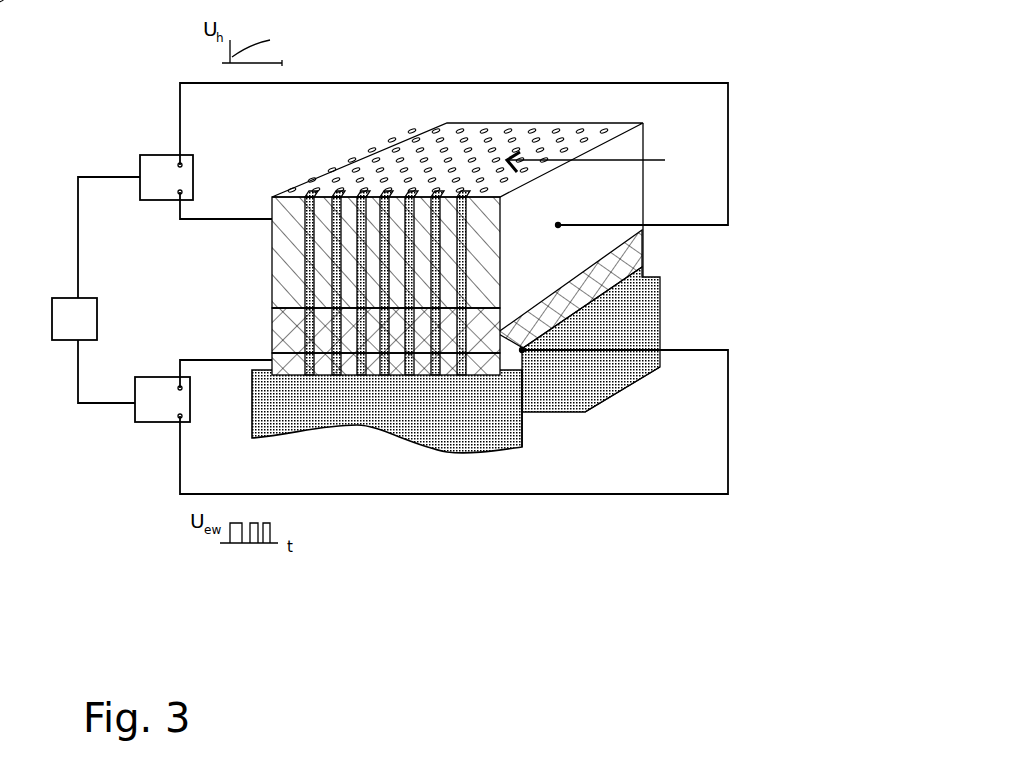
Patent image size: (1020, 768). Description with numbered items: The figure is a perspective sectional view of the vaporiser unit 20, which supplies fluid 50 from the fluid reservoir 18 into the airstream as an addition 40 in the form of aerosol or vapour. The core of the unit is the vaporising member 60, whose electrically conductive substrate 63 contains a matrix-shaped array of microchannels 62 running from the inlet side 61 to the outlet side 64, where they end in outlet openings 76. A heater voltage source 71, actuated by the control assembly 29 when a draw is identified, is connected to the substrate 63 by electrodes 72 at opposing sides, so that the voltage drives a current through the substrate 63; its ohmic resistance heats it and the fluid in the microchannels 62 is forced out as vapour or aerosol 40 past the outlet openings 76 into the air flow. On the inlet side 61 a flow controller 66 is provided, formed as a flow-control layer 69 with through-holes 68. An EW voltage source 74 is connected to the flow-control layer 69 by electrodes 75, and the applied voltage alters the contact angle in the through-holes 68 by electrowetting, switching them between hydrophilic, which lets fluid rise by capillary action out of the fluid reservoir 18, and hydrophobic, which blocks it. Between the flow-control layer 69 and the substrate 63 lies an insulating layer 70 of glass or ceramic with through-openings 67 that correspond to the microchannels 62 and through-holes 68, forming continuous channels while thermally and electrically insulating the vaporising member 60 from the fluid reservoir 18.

The fluid reservoir 18 is at (522, 417).
The vaporiser unit 20 is at (737, 275).
The control assembly 29 is at (92, 335).
The addition 40 is at (617, 160).
The fluid 50 is at (405, 418).
The vaporising member 60 is at (321, 213).
The inlet side 61 is at (293, 313).
The microchannels 62 is at (384, 290).
The substrate 63 is at (290, 238).
The outlet side 64 is at (510, 115).
The flow controller 66 is at (580, 316).
The through-openings 67 is at (410, 322).
The through-holes 68 is at (409, 365).
The flow-control layer 69 is at (480, 363).
The insulating layer 70 is at (643, 248).
The heater voltage source 71 is at (196, 173).
The electrodes 72 is at (562, 222).
The EW voltage source 74 is at (155, 423).
The electrodes 75 is at (530, 347).
The outlet openings 76 is at (422, 157).